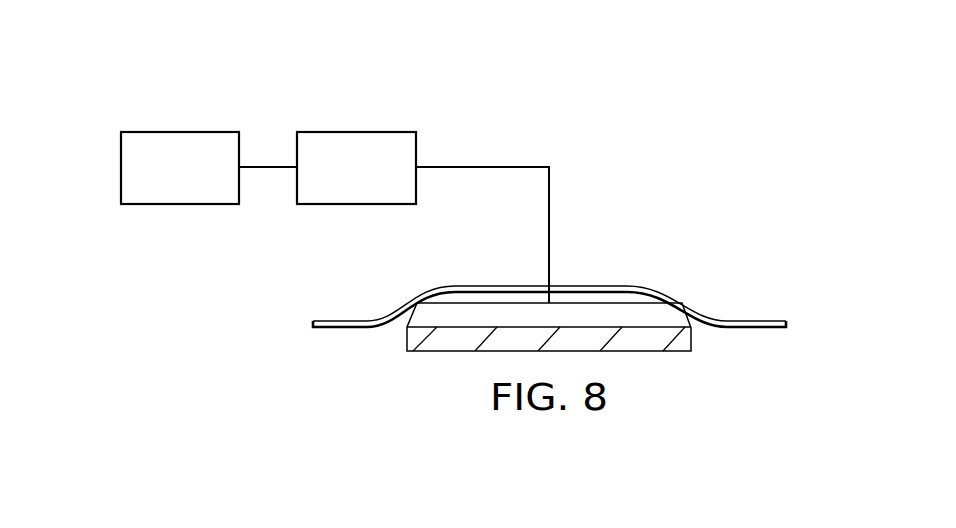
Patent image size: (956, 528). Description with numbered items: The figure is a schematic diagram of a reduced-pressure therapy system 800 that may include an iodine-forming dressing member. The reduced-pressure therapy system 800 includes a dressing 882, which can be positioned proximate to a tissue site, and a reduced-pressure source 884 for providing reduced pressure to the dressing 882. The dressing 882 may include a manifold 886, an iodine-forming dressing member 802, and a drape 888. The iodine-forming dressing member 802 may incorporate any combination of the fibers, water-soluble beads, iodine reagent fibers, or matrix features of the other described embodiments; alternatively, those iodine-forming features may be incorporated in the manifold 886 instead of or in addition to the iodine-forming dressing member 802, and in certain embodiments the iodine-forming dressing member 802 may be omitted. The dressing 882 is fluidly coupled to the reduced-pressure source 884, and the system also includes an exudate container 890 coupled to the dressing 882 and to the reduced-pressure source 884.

The reduced-pressure therapy system 800 is at (598, 121).
The dressing 882 is at (620, 232).
The reduced-pressure source 884 is at (203, 184).
The container 890 is at (333, 184).
The drape 888 is at (695, 302).
The iodine-forming dressing member 802 is at (415, 307).
The manifold 886 is at (692, 338).